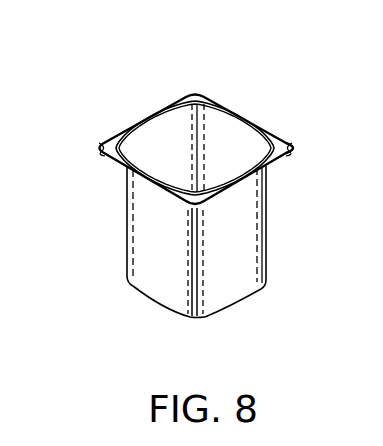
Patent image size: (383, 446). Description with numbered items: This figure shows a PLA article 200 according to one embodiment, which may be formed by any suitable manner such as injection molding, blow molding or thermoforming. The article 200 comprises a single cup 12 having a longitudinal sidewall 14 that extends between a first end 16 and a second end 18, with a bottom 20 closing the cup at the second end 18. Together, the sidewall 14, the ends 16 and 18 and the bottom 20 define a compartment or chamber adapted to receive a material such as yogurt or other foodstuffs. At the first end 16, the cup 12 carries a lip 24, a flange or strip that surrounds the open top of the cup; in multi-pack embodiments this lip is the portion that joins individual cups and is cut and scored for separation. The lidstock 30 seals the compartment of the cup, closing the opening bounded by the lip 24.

The PLA article 200 is at (132, 66).
The lip 24 is at (195, 91).
The lidstock 30 is at (223, 142).
The cup 12 is at (240, 256).
The first end 16 is at (134, 198).
The longitudinal sidewall 14 is at (247, 210).
The second end 18 is at (238, 285).
The bottom 20 is at (230, 310).